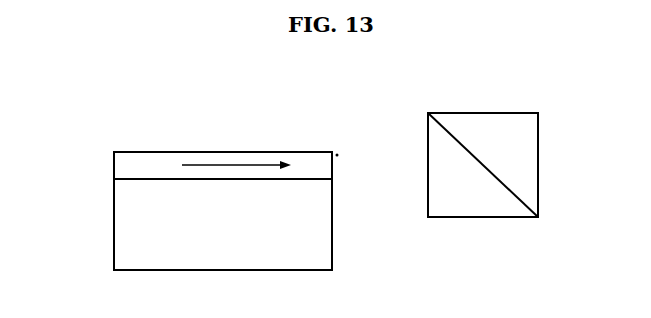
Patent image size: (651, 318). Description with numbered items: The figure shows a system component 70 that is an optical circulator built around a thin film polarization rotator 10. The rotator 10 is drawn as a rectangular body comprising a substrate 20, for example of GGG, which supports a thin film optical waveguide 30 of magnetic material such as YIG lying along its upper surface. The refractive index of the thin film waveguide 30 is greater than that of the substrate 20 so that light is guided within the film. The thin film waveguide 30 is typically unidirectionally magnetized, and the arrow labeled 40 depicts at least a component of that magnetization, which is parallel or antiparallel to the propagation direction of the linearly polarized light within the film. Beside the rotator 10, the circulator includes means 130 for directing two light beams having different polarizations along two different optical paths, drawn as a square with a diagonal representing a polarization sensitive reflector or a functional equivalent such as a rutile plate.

The system component 70 is at (342, 76).
The polarization rotator 10 is at (110, 236).
The thin film optical waveguide 30 is at (113, 158).
The magnetization 40 is at (209, 166).
The substrate 20 is at (227, 261).
The means for directing two light beams 130 is at (482, 112).